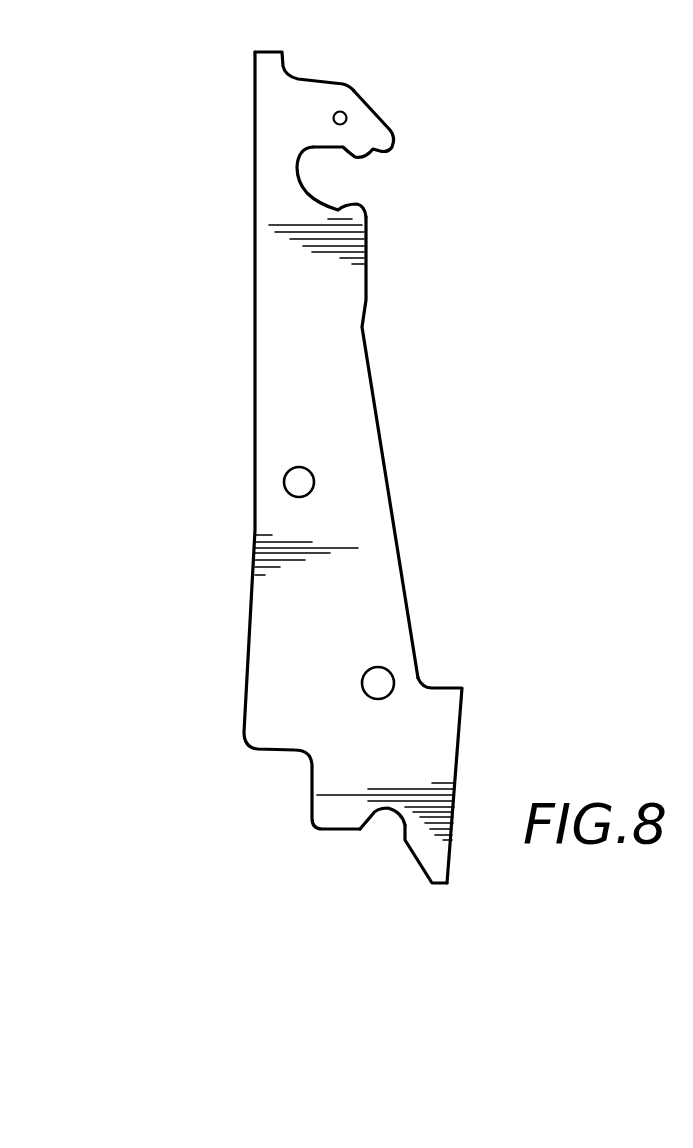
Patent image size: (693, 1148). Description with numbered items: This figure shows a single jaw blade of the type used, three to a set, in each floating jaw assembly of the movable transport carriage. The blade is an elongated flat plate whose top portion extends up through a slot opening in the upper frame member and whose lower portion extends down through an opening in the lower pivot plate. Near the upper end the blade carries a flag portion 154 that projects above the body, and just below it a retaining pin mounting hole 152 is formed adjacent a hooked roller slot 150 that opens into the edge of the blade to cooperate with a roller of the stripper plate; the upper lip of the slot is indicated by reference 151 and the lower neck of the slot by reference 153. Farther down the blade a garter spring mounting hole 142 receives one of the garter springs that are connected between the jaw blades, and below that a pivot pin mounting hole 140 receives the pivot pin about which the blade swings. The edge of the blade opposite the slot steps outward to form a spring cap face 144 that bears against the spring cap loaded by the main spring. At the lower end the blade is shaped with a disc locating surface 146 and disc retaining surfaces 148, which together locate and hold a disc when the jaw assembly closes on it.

The pivot pin mounting hole 140 is at (362, 682).
The garter spring mounting hole 142 is at (284, 481).
The spring cap face 144 is at (436, 688).
The disc locating surface 146 is at (418, 871).
The disc retaining surfaces 148 is at (398, 838).
The roller slot 150 is at (398, 200).
The hook portion 151 is at (343, 150).
The retaining pin mounting hole 152 is at (347, 120).
The neck portion 153 is at (367, 215).
The flag portion 154 is at (256, 64).